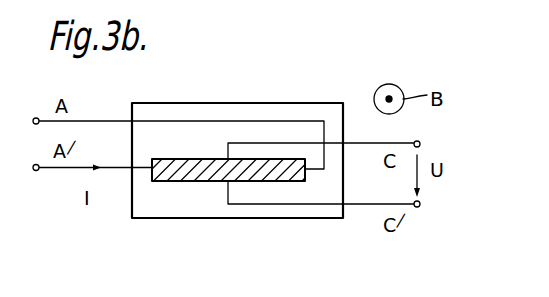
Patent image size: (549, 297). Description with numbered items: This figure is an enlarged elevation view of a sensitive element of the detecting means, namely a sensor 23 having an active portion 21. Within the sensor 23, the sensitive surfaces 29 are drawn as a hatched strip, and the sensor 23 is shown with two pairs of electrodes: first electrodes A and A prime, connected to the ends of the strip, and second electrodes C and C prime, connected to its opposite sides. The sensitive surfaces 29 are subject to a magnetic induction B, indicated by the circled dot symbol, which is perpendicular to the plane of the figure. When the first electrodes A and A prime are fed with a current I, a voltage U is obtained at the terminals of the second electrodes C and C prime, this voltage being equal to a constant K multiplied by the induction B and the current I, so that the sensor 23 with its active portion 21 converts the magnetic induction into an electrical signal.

The active portion 21 is at (203, 147).
The sensor 23 is at (157, 200).
The sensitive surfaces 29 is at (278, 168).